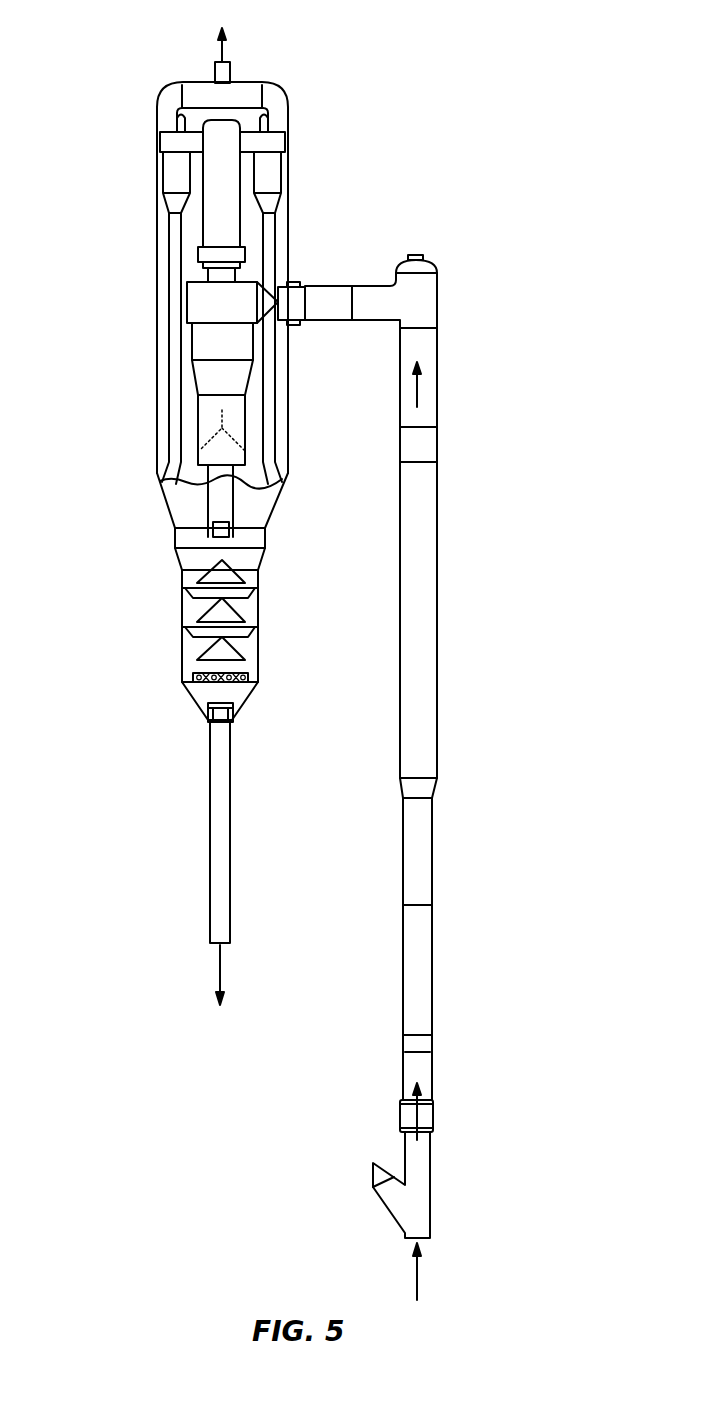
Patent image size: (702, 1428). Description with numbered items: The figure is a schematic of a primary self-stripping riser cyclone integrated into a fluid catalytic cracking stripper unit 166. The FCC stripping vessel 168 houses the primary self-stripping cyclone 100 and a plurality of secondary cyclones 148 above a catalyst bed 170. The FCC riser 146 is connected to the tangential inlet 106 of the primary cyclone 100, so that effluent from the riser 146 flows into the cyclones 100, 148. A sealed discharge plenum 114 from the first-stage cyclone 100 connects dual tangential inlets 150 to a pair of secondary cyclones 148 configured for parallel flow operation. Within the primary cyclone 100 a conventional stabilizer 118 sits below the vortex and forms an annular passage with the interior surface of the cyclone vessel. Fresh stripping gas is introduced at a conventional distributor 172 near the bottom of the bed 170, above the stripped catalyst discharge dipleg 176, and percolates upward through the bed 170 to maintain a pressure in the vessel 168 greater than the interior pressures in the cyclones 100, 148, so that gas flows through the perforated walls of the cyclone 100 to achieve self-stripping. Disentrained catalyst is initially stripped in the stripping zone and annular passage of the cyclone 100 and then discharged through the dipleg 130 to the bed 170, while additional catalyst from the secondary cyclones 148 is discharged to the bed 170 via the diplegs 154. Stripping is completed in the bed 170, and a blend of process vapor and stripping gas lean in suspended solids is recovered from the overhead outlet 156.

The self-stripping cyclone 100 is at (222, 302).
The tangential inlet 106 is at (305, 288).
The sealed vapor outlet plenum 114 is at (172, 201).
The stabilizer 118 is at (172, 394).
The solids discharge dipleg 130 is at (276, 501).
The FCC riser 146 is at (409, 777).
The secondary cyclone 148 is at (220, 182).
The tangential inlet 150 is at (221, 130).
The solids discharge dipleg 154 is at (187, 350).
The overhead outlet 156 is at (187, 51).
The FCC stripper unit 166 is at (310, 659).
The FCC stripping vessel 168 is at (190, 277).
The catalyst bed 170 is at (196, 597).
The distributor 172 is at (256, 697).
The stripped catalyst discharge dipleg 176 is at (181, 862).